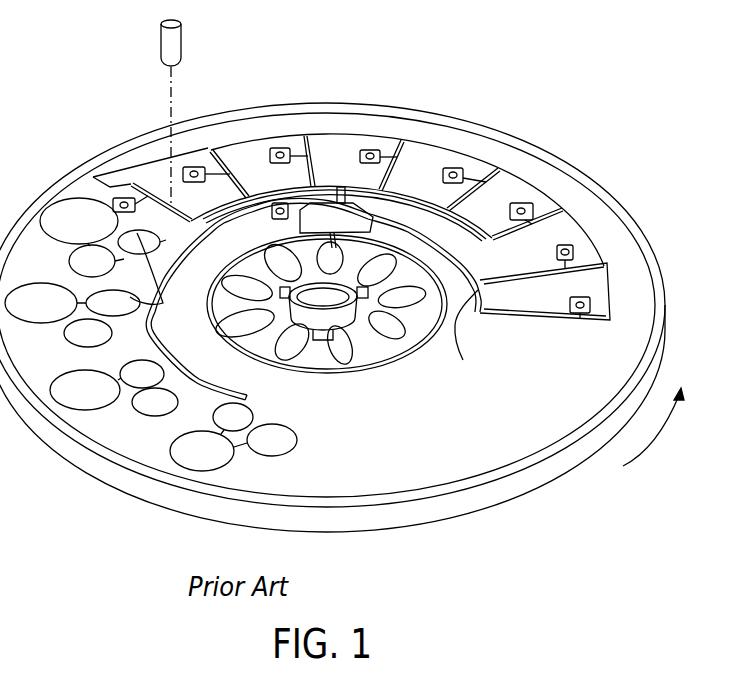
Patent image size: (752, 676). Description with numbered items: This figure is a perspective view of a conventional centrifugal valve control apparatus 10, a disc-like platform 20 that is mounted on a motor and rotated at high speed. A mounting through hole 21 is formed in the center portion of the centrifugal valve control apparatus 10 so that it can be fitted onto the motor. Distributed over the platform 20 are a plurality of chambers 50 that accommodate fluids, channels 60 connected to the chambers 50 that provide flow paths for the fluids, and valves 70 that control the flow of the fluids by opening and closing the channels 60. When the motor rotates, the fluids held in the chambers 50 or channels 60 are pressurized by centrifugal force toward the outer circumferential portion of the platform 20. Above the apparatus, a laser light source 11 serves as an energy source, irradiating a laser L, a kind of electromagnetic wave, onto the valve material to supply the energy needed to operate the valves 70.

The centrifugal valve control apparatus 10 is at (507, 112).
The laser light source 11 is at (181, 44).
The platform 20 is at (451, 506).
The mounting through hole 21 is at (328, 304).
The chambers 50 is at (217, 466).
The channels 60 is at (349, 313).
The valves 70 is at (150, 303).
The laser L is at (167, 108).